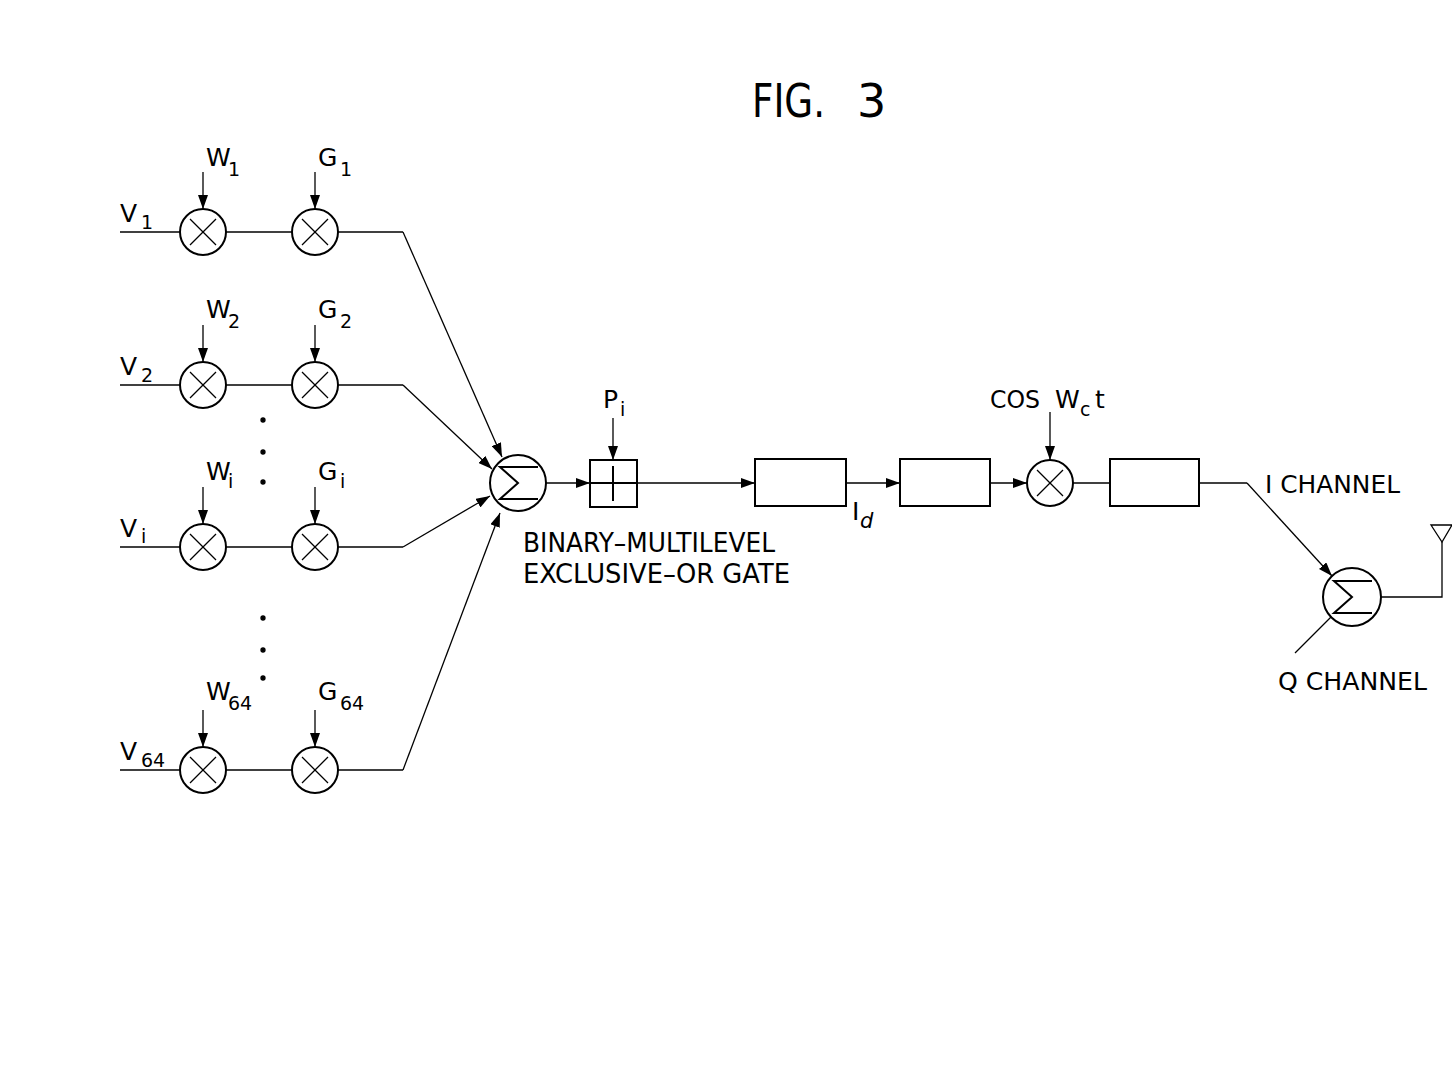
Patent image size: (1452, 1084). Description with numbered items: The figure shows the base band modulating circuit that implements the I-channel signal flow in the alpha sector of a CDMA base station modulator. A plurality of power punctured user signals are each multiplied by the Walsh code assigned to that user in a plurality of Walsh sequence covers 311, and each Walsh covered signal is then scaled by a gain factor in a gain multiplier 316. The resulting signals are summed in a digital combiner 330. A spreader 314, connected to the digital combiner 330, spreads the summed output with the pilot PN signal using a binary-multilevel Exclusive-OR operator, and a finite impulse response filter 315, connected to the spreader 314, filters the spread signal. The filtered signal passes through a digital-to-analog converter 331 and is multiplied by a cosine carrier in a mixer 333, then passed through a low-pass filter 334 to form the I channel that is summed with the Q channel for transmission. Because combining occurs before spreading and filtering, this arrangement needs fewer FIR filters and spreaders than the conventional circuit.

The Walsh sequence cover 311 is at (219, 214).
The code multiplier 316 is at (331, 214).
The digital combiner 330 is at (522, 455).
The spreader 314 is at (637, 461).
The finite impulse response (FIR) filter 315 is at (778, 459).
The D/A converter 331 is at (922, 459).
The mixer 333 is at (1052, 506).
The low-pass filter 334 is at (1132, 459).